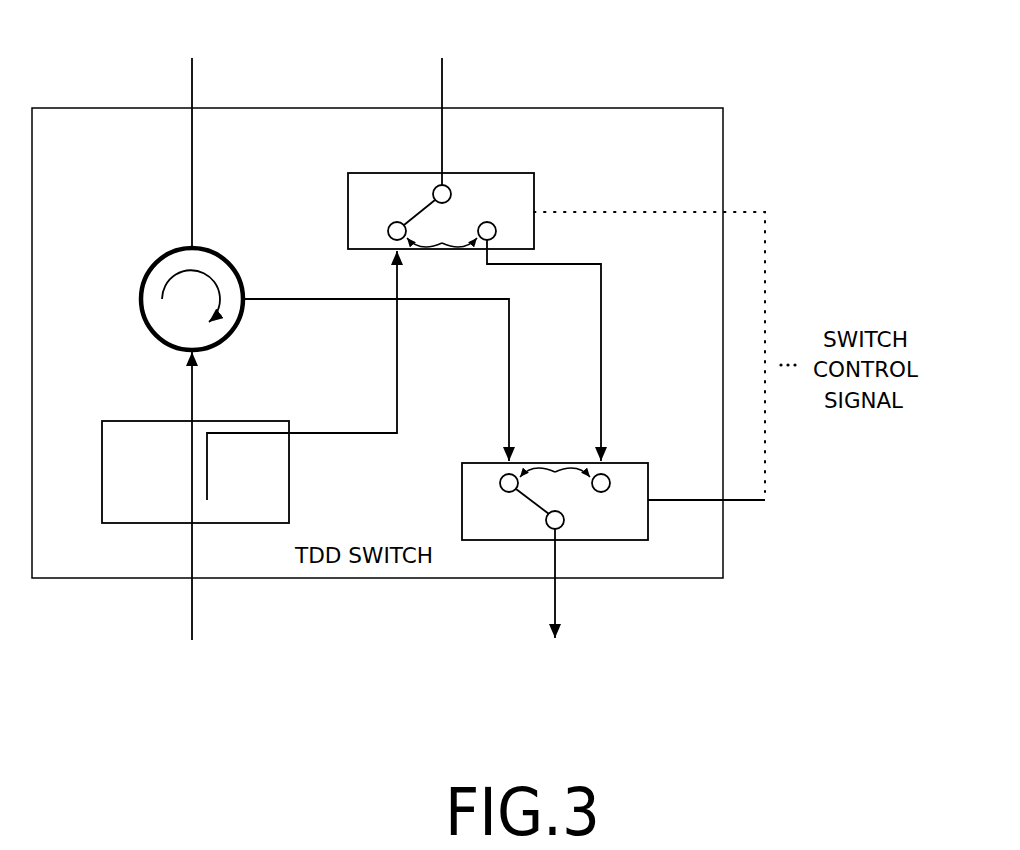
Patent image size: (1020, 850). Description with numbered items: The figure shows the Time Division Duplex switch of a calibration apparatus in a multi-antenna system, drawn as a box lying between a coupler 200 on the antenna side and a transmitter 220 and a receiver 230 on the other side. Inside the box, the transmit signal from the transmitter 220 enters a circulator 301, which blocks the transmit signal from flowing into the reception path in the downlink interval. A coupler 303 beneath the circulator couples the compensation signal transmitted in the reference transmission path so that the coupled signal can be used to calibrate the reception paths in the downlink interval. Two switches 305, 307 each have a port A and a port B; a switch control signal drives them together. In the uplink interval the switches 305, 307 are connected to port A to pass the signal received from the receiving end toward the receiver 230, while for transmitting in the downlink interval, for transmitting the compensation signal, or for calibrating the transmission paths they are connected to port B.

The coupler 200 is at (192, 134).
The transmitter 220 is at (194, 515).
The receiver 230 is at (557, 604).
The circulator 301 is at (162, 255).
The coupler 303 is at (137, 421).
The switch 305 is at (631, 463).
The switch 307 is at (519, 173).